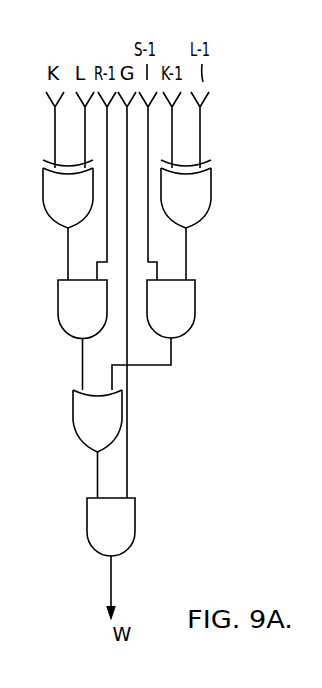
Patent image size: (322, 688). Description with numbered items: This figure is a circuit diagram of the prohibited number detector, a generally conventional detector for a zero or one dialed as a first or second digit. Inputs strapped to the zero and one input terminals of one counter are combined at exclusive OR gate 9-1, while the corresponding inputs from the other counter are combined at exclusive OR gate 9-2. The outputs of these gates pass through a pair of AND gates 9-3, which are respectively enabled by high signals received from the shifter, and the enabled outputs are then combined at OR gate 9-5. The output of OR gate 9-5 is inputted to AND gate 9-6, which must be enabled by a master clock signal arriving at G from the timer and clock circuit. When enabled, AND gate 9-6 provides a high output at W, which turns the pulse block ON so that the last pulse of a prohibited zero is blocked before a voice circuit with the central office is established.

The exclusive OR gate 9-1 is at (50, 189).
The exclusive OR gate 9-2 is at (201, 205).
The AND gate 9-3 is at (68, 316).
The OR gate 9-5 is at (84, 432).
The AND gate 9-6 is at (96, 536).